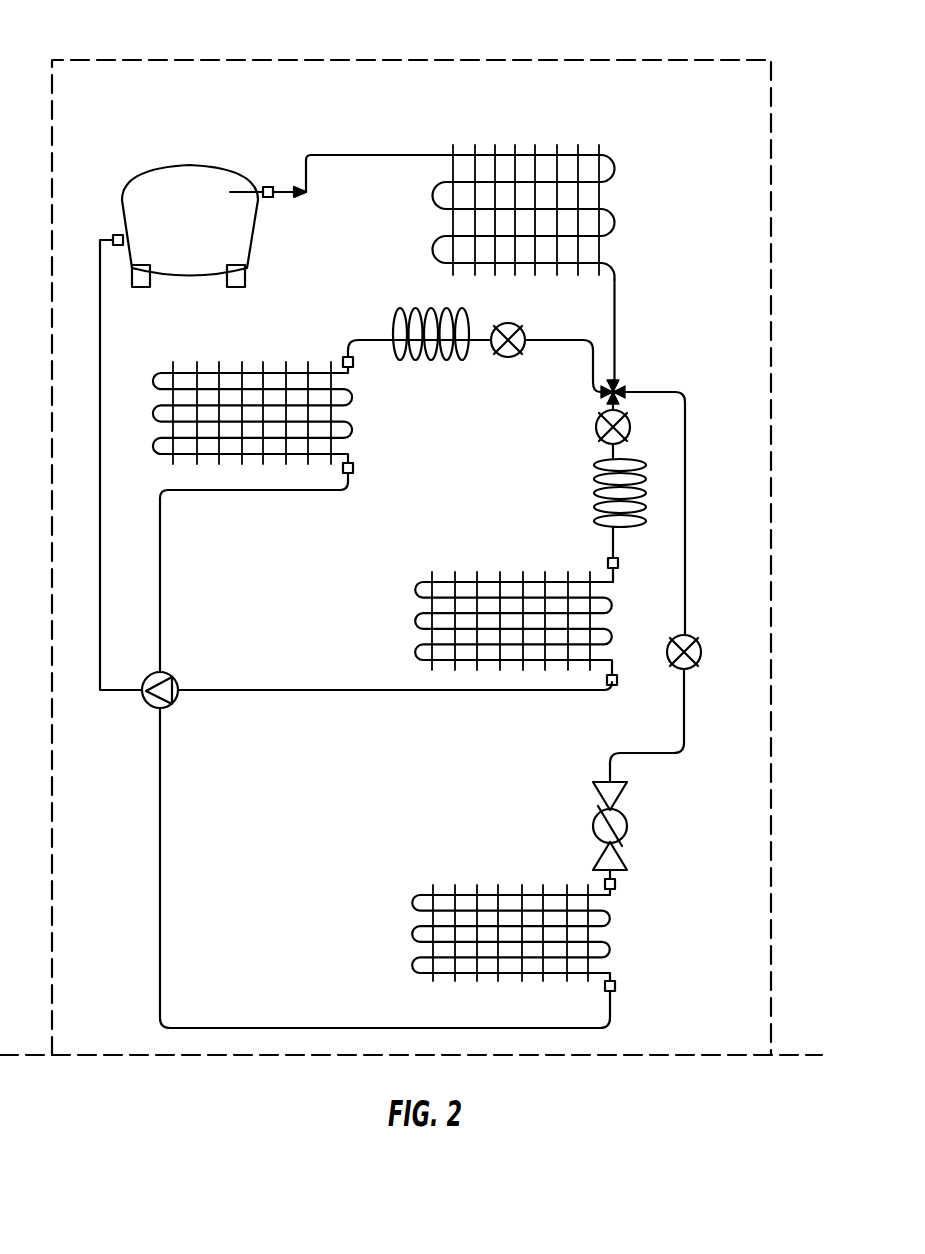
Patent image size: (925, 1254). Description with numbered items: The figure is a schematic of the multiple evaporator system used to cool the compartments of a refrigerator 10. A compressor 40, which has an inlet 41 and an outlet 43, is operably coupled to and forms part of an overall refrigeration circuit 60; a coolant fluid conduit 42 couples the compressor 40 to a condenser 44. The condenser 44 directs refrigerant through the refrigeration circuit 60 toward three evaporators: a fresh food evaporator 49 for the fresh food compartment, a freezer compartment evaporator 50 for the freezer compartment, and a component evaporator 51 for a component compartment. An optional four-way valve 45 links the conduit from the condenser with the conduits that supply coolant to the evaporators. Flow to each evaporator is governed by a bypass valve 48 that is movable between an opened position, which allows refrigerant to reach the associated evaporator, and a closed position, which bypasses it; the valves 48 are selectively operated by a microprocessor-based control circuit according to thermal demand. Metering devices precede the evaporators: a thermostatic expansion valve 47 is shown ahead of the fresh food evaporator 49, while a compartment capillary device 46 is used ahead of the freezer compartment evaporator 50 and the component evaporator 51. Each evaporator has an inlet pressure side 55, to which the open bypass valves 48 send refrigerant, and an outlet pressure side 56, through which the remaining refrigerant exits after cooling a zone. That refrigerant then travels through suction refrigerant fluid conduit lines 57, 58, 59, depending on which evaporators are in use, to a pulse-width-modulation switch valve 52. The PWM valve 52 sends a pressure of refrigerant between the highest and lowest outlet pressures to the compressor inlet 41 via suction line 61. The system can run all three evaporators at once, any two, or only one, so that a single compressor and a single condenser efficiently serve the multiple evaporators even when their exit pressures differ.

The refrigerator 10 is at (803, 83).
The compressor 40 is at (253, 235).
The inlet 41 is at (117, 234).
The coolant fluid conduit 42 is at (304, 178).
The outlet 43 is at (272, 198).
The condenser 44 is at (527, 153).
The four-way valve 45 is at (621, 382).
The compartment capillary device 46 is at (414, 364).
The thermostatic expansion valve 47 is at (597, 801).
The bypass valve 48 is at (527, 350).
The fresh food evaporator 49 is at (415, 893).
The freezer compartment evaporator 50 is at (420, 580).
The component evaporator 51 is at (150, 381).
The pulse-width-modulation switch valve 52 is at (158, 672).
The inlet pressure side 55 is at (356, 348).
The outlet pressure side 56 is at (354, 468).
The suction refrigerant fluid conduit line 57 is at (178, 1026).
The suction refrigerant fluid conduit line 58 is at (262, 693).
The suction refrigerant fluid conduit line 59 is at (253, 492).
The refrigeration circuit 60 is at (619, 283).
The suction line 61 is at (102, 398).